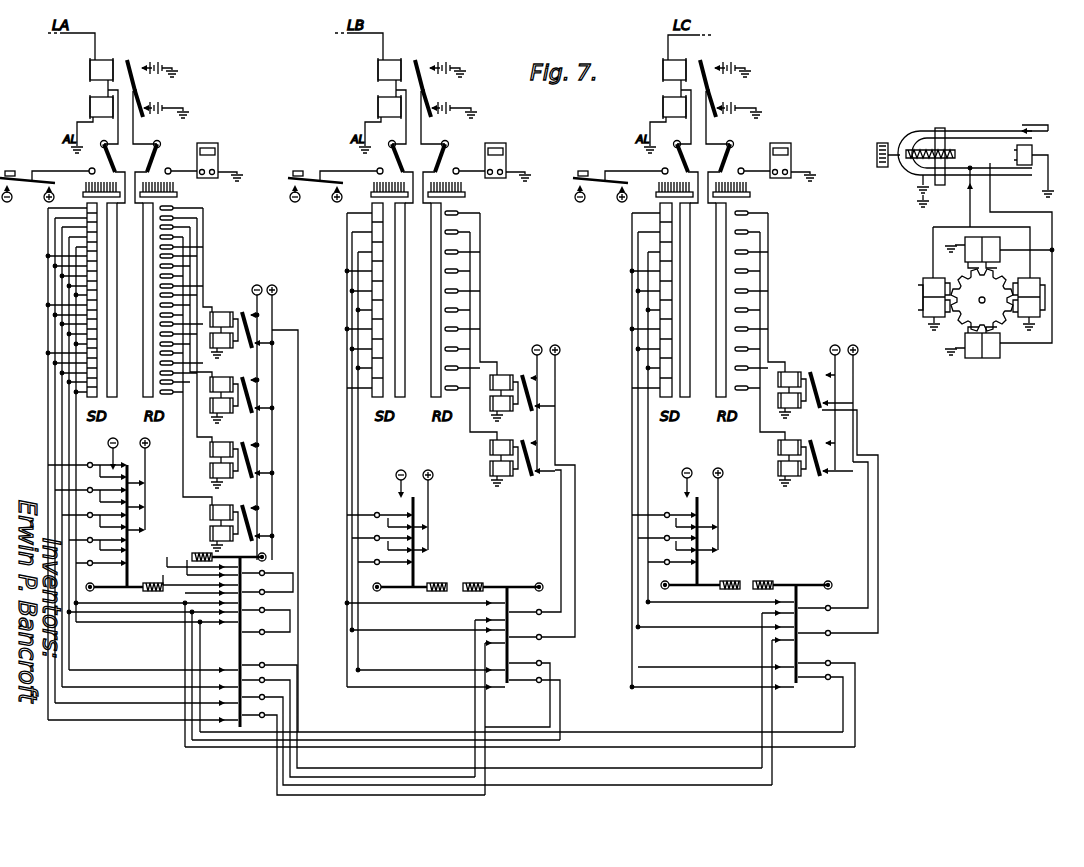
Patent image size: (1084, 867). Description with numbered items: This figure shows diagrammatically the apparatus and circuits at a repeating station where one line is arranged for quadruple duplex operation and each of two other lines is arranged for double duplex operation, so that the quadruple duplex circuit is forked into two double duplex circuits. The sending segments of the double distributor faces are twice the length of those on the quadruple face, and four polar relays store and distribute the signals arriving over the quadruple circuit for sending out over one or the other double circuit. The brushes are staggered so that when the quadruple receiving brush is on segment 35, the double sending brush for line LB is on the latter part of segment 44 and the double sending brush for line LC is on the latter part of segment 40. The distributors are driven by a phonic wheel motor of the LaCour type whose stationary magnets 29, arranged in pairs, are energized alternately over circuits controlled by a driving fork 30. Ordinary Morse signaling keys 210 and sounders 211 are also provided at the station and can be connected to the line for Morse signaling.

The Morse signaling key 210 is at (22, 170).
The sounder 211 is at (218, 157).
The segment 35 is at (176, 206).
The segment 44 is at (372, 228).
The segment 40 is at (660, 235).
The driving fork 30 is at (917, 133).
The stationary magnets 29 is at (1042, 305).